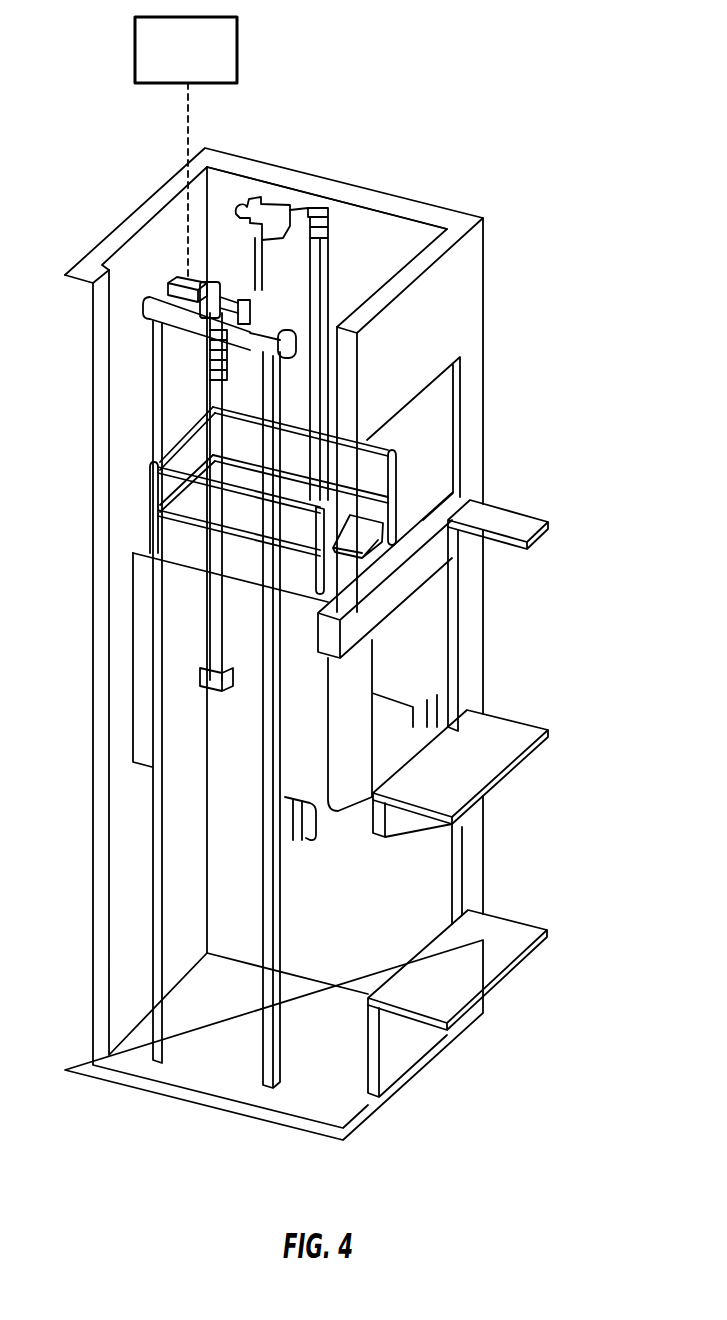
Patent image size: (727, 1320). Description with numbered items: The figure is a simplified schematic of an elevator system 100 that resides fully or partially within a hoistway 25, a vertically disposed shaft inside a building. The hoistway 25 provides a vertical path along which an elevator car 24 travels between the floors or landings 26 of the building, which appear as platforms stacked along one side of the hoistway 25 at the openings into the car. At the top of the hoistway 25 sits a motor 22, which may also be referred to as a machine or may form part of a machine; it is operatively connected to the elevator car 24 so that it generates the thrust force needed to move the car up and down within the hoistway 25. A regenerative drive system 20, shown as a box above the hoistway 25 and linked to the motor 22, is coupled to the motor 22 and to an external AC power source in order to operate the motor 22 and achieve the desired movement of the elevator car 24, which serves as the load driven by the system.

The elevator system 100 is at (520, 112).
The regenerative drive system 20 is at (174, 63).
The motor 22 is at (175, 282).
The elevator car 24 is at (425, 637).
The hoistway 25 is at (380, 232).
The landings 26 is at (518, 520).